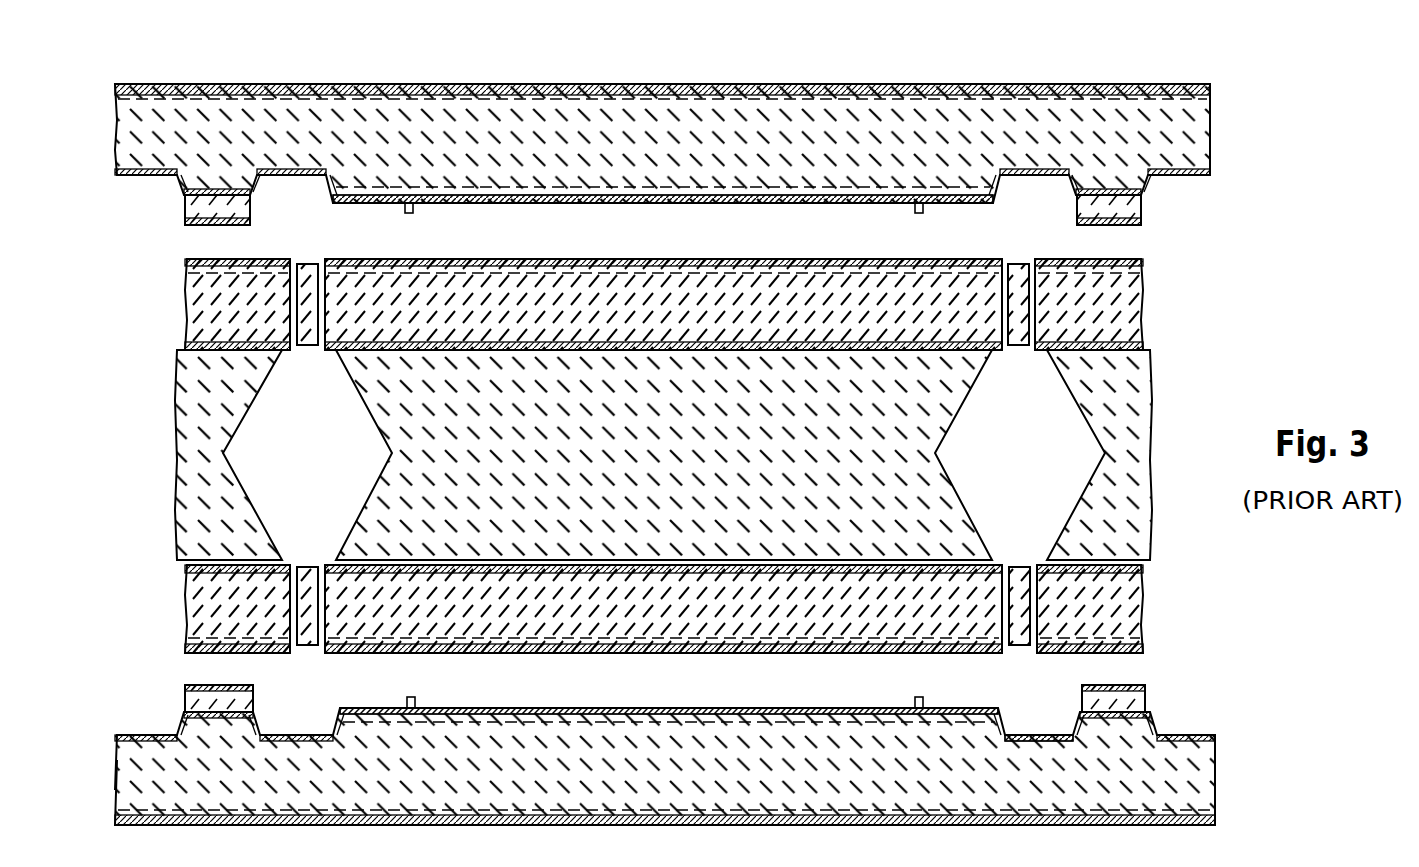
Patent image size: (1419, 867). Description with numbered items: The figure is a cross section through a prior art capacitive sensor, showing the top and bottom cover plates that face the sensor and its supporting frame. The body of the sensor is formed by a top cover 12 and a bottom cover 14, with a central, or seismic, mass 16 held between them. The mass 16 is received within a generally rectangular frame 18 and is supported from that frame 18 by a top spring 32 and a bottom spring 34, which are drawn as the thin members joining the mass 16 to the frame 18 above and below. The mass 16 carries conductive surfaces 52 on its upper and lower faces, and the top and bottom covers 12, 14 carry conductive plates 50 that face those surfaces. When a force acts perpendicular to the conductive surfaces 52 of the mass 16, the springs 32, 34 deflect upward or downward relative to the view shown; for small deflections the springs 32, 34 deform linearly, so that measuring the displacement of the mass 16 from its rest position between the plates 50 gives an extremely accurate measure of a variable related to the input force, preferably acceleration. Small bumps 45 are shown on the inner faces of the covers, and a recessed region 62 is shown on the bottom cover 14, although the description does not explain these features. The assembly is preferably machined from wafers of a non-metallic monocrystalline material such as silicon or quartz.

The top cover 12 is at (1208, 122).
The bottom cover 14 is at (1208, 768).
The central mass 16 is at (955, 450).
The frame 18 is at (185, 398).
The top spring 32 is at (311, 262).
The bottom spring 34 is at (307, 565).
The bump stop 45 is at (411, 213).
The conductive plate 50 is at (620, 205).
The conductive surface 52 is at (745, 259).
The electrode 62 is at (1040, 734).